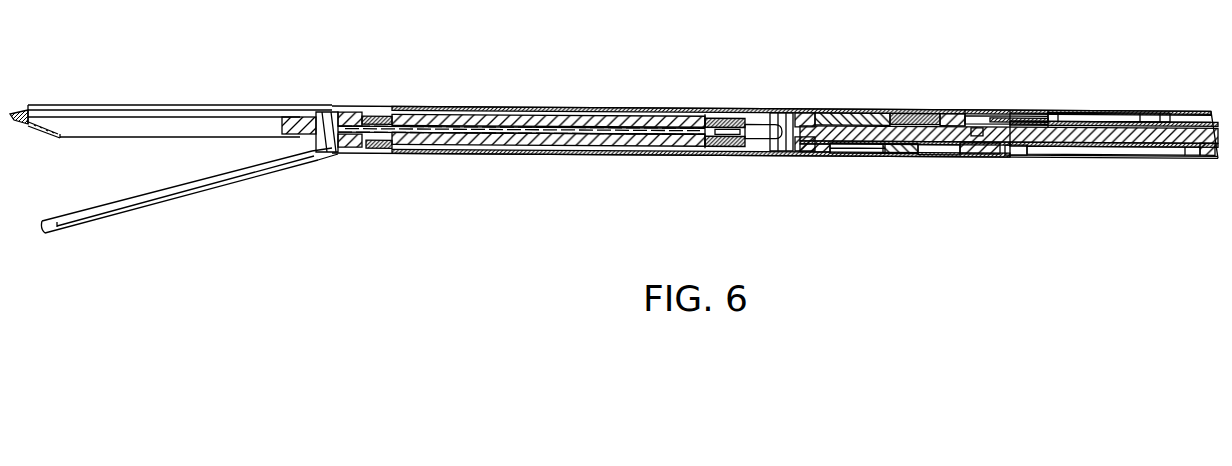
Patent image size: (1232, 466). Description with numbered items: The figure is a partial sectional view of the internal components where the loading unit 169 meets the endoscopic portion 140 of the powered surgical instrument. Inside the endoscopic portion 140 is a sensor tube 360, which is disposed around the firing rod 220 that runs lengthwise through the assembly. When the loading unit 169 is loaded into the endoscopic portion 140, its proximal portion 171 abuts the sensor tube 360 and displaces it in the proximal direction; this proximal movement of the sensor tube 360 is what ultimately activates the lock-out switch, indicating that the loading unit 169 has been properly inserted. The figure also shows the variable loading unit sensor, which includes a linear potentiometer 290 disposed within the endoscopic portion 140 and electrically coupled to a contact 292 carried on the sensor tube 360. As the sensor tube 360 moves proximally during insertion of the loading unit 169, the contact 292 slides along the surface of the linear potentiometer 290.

The loading unit 169 is at (580, 86).
The endoscopic portion 140 is at (1054, 69).
The contact 292 is at (976, 128).
The firing rod 220 is at (1113, 118).
The proximal portion 171 is at (895, 153).
The linear potentiometer 290 is at (1006, 154).
The sensor tube 360 is at (1069, 147).